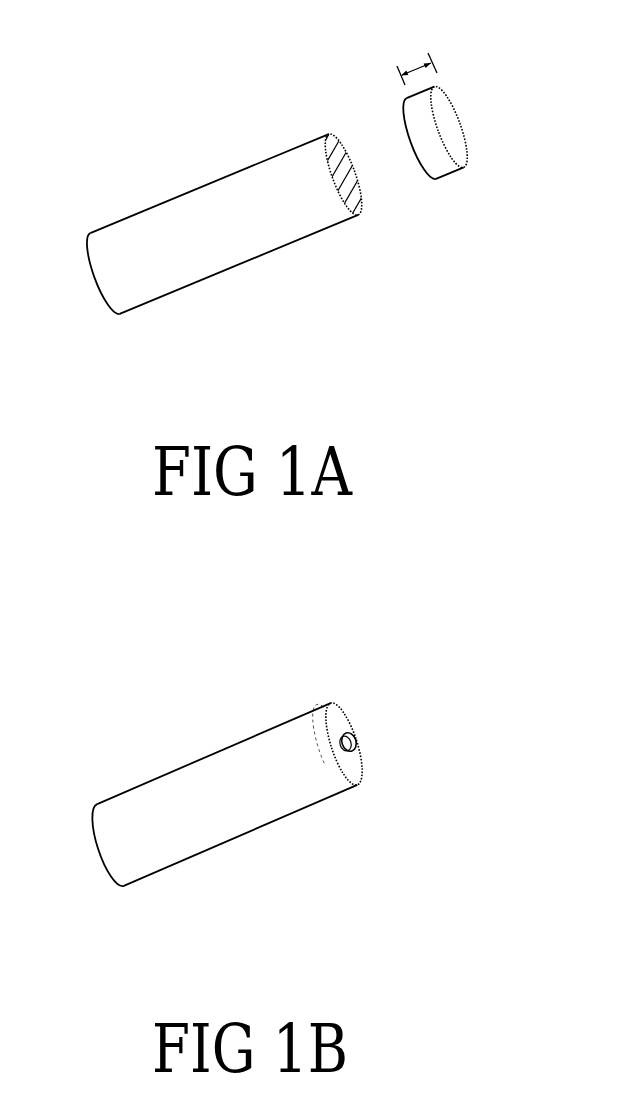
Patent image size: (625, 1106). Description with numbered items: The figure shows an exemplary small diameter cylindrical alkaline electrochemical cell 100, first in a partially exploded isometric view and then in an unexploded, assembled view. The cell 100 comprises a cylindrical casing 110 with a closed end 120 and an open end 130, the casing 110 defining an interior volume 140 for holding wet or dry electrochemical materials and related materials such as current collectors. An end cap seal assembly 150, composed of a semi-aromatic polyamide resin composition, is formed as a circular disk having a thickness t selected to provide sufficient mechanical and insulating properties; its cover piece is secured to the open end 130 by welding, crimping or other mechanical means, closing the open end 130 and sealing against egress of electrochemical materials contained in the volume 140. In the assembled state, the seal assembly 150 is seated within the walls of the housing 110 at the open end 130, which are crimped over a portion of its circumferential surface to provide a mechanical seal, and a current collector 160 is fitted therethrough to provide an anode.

In FIG. 1A, the small diameter cylindrical alkaline electrochemical cell 100 is at (112, 84).
In FIG. 1A, the cylindrical casing 110 is at (250, 247).
In FIG. 1B, the cylindrical casing 110 is at (253, 818).
In FIG. 1A, the closed end 120 is at (80, 314).
In FIG. 1B, the closed end 120 is at (83, 885).
In FIG. 1A, the open end 130 is at (382, 198).
In FIG. 1A, the interior volume 140 is at (337, 140).
In FIG. 1A, the end cap seal assembly 150 is at (452, 127).
In FIG. 1B, the end cap seal assembly 150 is at (347, 723).
In FIG. 1B, the current collector 160 is at (352, 740).